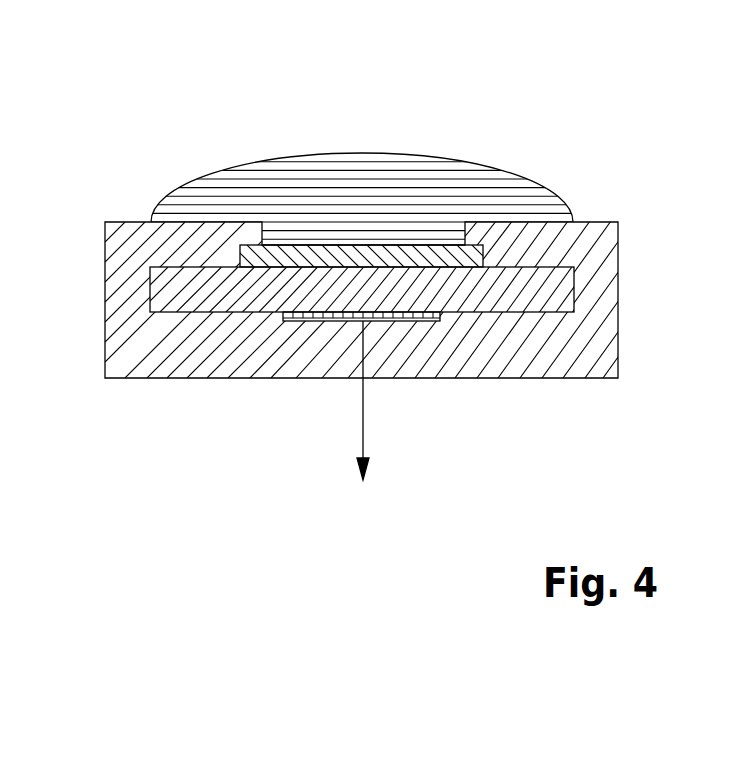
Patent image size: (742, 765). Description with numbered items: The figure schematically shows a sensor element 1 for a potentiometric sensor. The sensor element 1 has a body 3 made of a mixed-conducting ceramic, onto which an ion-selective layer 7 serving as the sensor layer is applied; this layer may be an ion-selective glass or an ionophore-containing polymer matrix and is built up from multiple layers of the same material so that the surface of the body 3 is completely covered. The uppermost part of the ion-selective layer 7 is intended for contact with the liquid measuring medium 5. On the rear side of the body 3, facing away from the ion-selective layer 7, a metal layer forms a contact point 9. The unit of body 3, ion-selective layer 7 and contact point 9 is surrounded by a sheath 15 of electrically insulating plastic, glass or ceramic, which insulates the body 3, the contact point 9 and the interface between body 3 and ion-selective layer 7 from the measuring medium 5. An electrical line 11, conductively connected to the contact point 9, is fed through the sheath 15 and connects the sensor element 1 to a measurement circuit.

The sensor element 1 is at (640, 121).
The body 3 is at (552, 292).
The liquid measuring medium 5 is at (312, 183).
The ion-selective layer 7 is at (419, 244).
The contact point 9 is at (327, 320).
The electrical line 11 is at (366, 442).
The sheath 15 is at (598, 267).